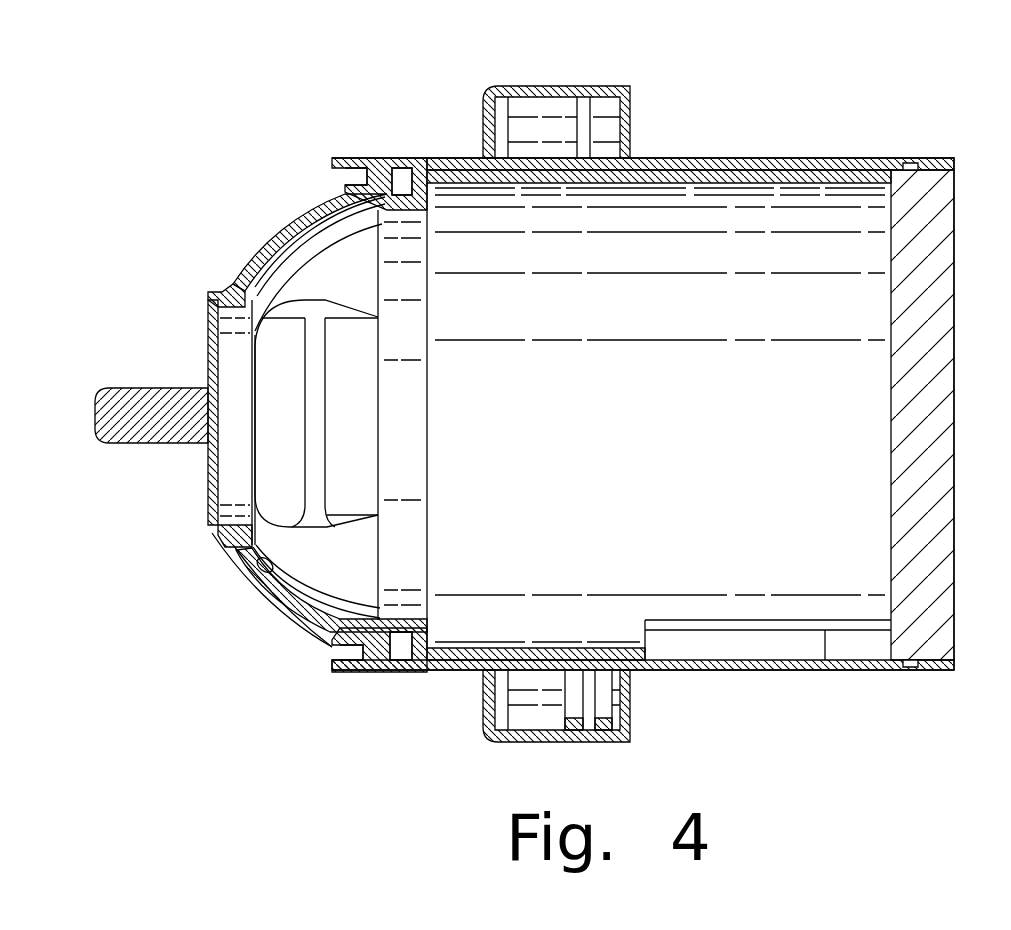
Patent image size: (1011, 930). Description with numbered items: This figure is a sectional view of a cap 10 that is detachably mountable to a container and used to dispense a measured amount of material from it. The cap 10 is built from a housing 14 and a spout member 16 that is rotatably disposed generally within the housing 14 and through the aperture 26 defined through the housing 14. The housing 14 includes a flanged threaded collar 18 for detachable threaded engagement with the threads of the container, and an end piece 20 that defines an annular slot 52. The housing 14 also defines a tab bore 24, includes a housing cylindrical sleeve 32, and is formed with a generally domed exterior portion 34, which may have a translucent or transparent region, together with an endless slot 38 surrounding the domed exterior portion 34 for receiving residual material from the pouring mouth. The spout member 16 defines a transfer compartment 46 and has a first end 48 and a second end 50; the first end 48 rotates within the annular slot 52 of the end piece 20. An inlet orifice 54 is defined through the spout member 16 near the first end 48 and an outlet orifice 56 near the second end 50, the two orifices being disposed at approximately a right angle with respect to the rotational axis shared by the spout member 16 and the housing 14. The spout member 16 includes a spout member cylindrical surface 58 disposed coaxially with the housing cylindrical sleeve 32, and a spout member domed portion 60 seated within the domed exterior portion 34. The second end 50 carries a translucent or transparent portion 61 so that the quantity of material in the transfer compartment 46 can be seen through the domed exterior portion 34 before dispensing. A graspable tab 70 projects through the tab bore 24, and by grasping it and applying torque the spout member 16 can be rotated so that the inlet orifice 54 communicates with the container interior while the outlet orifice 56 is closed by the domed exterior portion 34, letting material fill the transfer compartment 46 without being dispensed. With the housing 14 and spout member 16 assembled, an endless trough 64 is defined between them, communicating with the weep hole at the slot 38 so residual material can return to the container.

The cap 10 is at (893, 107).
The housing 14 is at (384, 160).
The spout member 16 is at (745, 184).
The flanged threaded collar 18 is at (632, 92).
The end piece 20 is at (948, 445).
The tab bore 24 is at (215, 533).
The aperture 26 is at (745, 670).
The housing cylindrical sleeve 32 is at (790, 158).
The domed exterior portion 34 is at (237, 272).
The endless slot 38 is at (338, 178).
The transfer compartment 46 is at (645, 408).
The first end 48 is at (872, 181).
The second end 50 is at (278, 612).
The annular slot 52 is at (915, 168).
The inlet orifice 54 is at (828, 636).
The outlet orifice 56 is at (303, 405).
The spout member cylindrical surface 58 is at (530, 186).
The spout member domed portion 60 is at (268, 578).
The translucent or transparent portion 61 is at (228, 560).
The endless trough 64 is at (402, 178).
The tab 70 is at (125, 388).